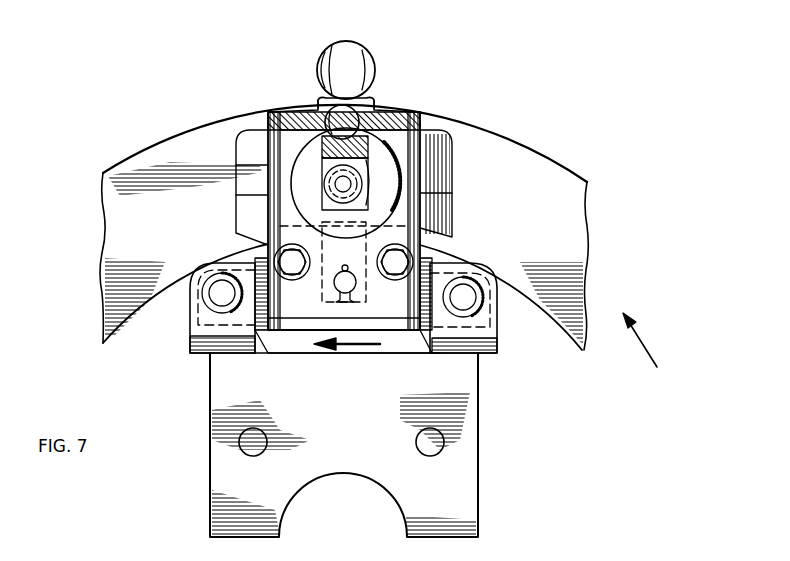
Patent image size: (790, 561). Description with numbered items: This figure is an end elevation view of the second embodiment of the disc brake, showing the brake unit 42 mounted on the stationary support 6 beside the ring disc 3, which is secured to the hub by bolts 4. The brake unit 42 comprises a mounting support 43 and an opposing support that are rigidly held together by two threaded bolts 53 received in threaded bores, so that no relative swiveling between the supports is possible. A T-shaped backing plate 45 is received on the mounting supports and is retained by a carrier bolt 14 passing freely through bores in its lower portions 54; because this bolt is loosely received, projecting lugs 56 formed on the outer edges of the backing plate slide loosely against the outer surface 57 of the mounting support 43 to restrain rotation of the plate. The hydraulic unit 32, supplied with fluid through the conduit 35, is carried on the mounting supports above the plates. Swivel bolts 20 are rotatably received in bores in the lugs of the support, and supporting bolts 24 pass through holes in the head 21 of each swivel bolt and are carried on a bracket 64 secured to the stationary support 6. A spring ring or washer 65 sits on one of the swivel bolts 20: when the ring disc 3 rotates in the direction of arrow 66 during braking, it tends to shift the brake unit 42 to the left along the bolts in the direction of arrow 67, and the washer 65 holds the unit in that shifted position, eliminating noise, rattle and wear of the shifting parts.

The ring disc 3 is at (160, 162).
The bolts 4 is at (352, 62).
The stationary support 6 is at (458, 499).
The carrier bolt 14 is at (356, 287).
The swivel bolts 20 is at (270, 332).
The head 21 is at (210, 322).
The supporting bolts 24 is at (215, 293).
The hydraulic unit 32 is at (308, 151).
The conduit 35 is at (328, 184).
The brake unit 42 is at (510, 128).
The mounting support 43 is at (410, 150).
The backing plate 45 is at (247, 143).
The threaded bolts 53 is at (283, 250).
The lower portions 54 is at (345, 250).
The projecting lugs 56 is at (242, 203).
The outer surface 57 is at (267, 165).
The bracket 64 is at (192, 345).
The spring ring or washer 65 is at (414, 333).
The arrow 66 is at (648, 348).
The arrow 67 is at (343, 348).